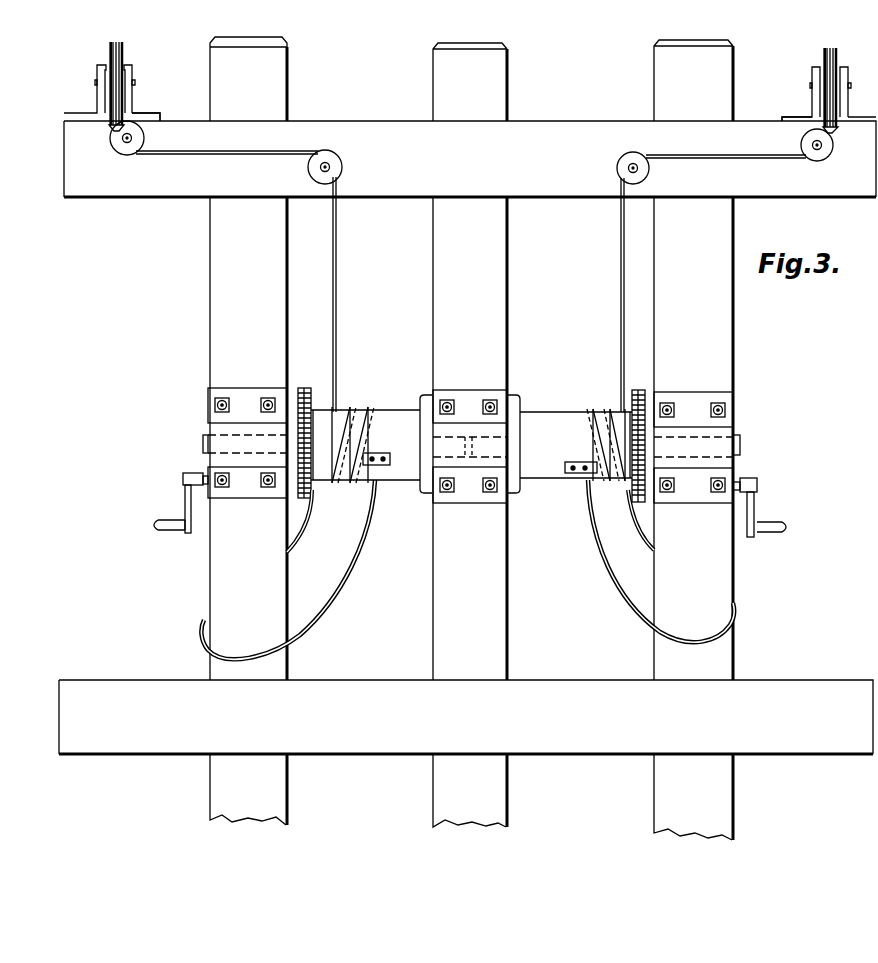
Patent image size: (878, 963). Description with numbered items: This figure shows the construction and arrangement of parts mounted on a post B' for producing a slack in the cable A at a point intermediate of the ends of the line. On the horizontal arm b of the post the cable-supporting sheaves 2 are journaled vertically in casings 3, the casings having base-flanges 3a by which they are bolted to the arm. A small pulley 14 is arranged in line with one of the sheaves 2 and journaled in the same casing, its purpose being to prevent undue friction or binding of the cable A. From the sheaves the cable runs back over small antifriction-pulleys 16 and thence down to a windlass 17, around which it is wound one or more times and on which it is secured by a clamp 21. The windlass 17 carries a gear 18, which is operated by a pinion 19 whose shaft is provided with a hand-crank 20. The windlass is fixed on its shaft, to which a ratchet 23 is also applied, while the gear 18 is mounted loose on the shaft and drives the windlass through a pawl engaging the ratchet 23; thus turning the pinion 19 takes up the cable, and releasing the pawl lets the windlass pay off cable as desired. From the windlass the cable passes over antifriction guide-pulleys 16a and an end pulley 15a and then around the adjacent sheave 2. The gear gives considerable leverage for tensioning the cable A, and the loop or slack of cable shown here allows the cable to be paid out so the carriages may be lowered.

The cable-supporting pulley or sheave 2 is at (109, 50).
The small pulley 14 is at (125, 68).
The casing 3 is at (130, 86).
The casing 3a is at (157, 120).
The end pulley 15a is at (112, 128).
The antifriction-pulley 16 is at (471, 154).
The antifriction guide-pulley 16a is at (618, 168).
The windlass 17 is at (471, 445).
The gear 18 is at (304, 388).
The pinion 19 is at (297, 497).
The hand-crank 20 is at (470, 496).
The clamp 21 is at (377, 453).
The ratchet 23 is at (651, 423).
The cable A is at (471, 395).
The post B' is at (471, 438).
The horizontal arm b is at (470, 159).